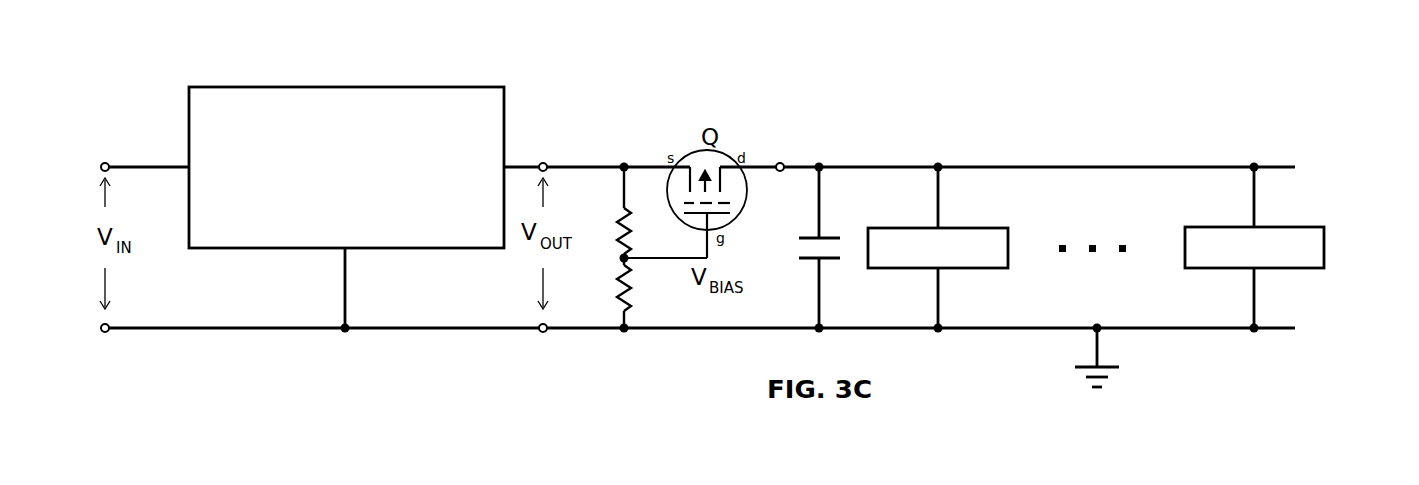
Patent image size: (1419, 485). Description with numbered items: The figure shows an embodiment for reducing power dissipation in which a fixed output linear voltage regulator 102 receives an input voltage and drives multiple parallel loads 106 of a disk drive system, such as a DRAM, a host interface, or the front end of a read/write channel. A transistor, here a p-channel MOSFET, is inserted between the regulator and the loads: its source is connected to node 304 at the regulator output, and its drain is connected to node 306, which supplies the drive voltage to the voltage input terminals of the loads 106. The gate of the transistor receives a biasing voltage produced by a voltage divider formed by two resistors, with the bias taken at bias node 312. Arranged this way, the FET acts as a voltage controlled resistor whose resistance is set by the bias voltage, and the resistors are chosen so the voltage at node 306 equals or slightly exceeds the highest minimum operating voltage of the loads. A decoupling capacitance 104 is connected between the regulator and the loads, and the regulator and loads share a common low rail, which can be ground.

The fixed output linear voltage regulator 102 is at (465, 87).
The node 304 is at (543, 160).
The node 306 is at (783, 160).
The bias node 312 is at (632, 262).
The decoupling capacitance 104 is at (830, 264).
The loads 106 is at (987, 228).